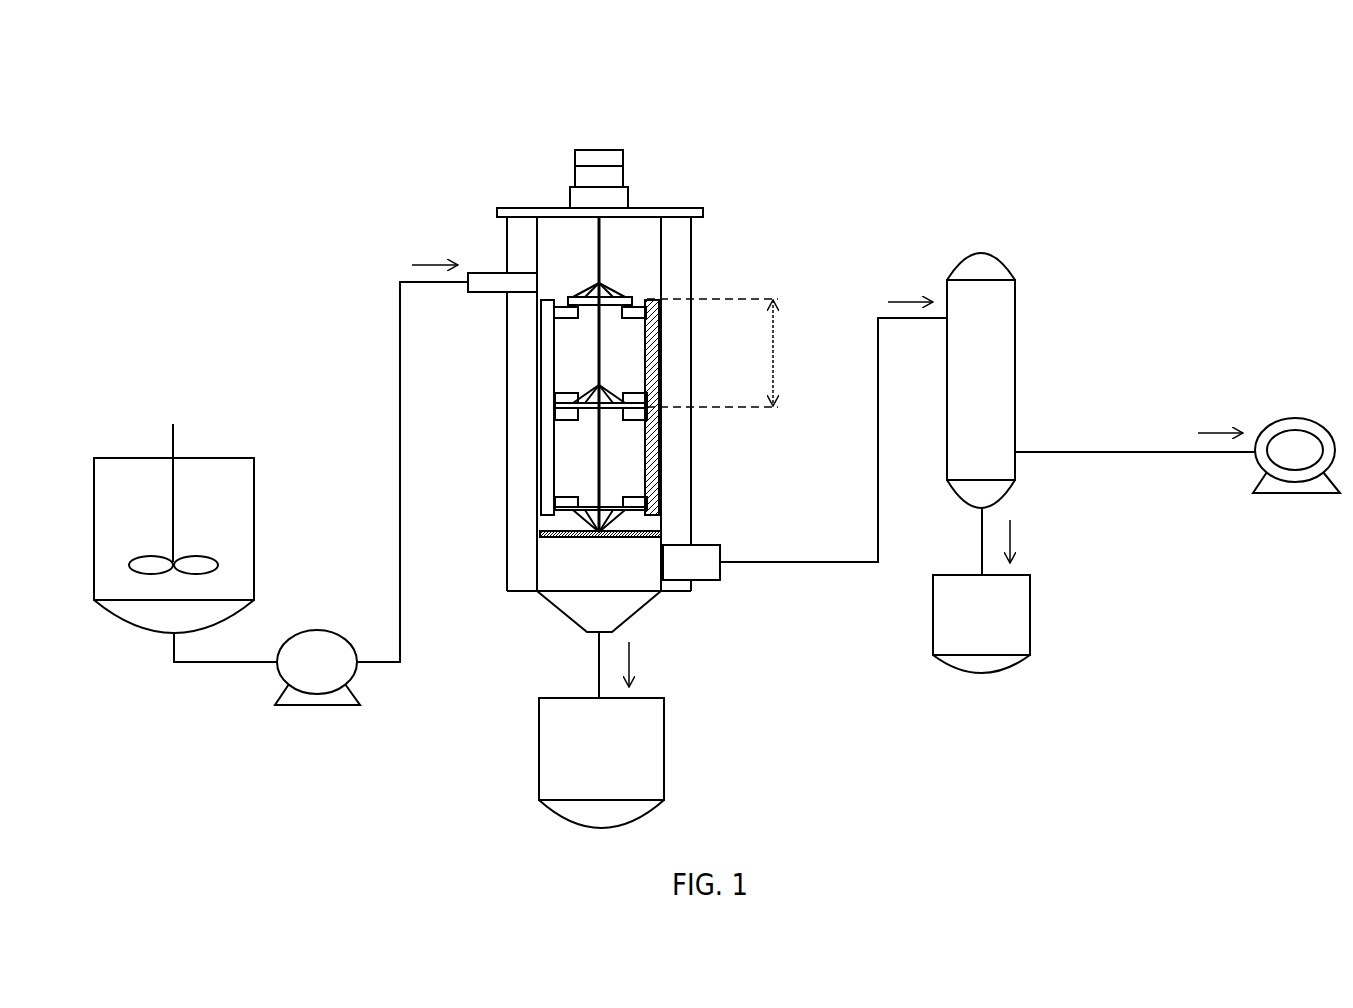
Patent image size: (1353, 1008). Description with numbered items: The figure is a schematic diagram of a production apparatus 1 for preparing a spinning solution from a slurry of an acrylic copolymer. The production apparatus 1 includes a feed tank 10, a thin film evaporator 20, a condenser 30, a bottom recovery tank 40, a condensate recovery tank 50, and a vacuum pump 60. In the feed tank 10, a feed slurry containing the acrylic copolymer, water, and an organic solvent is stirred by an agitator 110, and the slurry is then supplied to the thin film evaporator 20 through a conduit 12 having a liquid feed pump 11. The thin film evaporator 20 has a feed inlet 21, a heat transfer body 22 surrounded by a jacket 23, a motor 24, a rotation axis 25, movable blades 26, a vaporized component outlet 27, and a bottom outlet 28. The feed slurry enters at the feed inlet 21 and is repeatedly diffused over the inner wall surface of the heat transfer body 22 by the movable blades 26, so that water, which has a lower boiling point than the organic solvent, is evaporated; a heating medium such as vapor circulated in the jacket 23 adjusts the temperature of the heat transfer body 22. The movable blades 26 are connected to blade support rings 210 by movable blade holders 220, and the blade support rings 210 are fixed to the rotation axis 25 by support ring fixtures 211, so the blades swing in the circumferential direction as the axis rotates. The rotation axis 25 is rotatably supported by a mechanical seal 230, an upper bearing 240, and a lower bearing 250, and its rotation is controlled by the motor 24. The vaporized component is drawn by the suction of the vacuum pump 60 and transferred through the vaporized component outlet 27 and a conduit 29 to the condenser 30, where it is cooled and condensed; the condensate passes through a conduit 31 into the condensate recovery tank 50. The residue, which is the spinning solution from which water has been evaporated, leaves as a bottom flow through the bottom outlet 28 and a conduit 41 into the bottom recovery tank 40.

The production apparatus 1 is at (1096, 90).
The feed tank 10 is at (256, 497).
The agitator 110 is at (176, 441).
The liquid feed pump 11 is at (317, 630).
The conduit 12 is at (402, 627).
The thin film evaporator 20 is at (618, 136).
The feed inlet 21 is at (486, 272).
The heat transfer body 22 is at (535, 462).
The jacket 23 is at (522, 407).
The motor 24 is at (604, 174).
The upper bearing 240 is at (623, 166).
The mechanical seal 230 is at (628, 197).
The rotation axis 25 is at (601, 344).
The movable blades 26 is at (655, 376).
The blade support rings 210 is at (655, 389).
The support ring fixtures 211 is at (623, 288).
The movable blade holders 220 is at (635, 409).
The lower bearing 250 is at (642, 526).
The vaporized component outlet 27 is at (707, 582).
The bottom outlet 28 is at (597, 636).
The conduit 41 is at (597, 680).
The bottom recovery tank 40 is at (665, 750).
The conduit 29 is at (878, 496).
The condenser 30 is at (1017, 355).
The conduit 31 is at (982, 545).
The condensate recovery tank 50 is at (1032, 613).
The vacuum pump 60 is at (1295, 418).